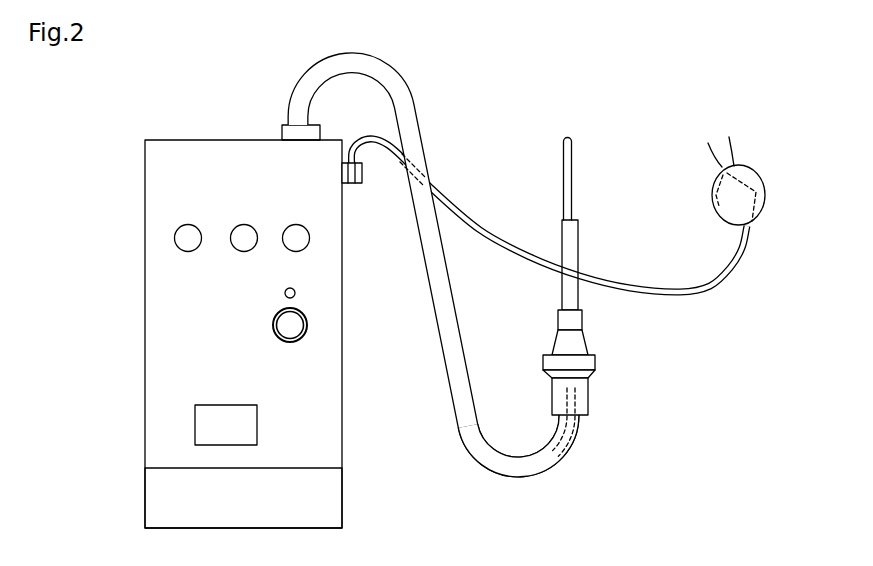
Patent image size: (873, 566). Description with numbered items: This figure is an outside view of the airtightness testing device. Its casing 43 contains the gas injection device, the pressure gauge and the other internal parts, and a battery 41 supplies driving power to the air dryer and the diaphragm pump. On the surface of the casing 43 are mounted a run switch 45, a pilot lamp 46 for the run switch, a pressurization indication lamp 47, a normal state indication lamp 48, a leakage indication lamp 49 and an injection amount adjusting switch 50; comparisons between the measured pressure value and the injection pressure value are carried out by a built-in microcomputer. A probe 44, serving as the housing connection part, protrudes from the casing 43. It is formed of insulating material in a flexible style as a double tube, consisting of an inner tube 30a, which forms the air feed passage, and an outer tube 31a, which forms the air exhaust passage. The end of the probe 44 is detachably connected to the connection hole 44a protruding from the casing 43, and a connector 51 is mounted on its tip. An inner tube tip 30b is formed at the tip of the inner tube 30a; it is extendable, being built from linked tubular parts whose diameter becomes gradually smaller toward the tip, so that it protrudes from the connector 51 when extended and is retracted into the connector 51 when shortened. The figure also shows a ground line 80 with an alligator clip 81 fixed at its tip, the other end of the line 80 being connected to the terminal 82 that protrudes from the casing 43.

The inner tube 30a is at (573, 432).
The inner tube tip 30b is at (573, 190).
The outer tube 31a is at (517, 456).
The battery 41 is at (335, 495).
The casing 43 is at (145, 322).
The probe 44 is at (450, 308).
The connection hole 44a is at (282, 135).
The run switch 45 is at (306, 332).
The pilot lamp 46 is at (296, 293).
The pressurization indication lamp 47 is at (188, 225).
The normal state indication lamp 48 is at (244, 225).
The leakage indication lamp 49 is at (296, 225).
The injection amount adjusting switch 50 is at (227, 412).
The connector 51 is at (595, 361).
The ground line 80 is at (712, 296).
The alligator clip 81 is at (741, 150).
The terminal 82 is at (353, 183).